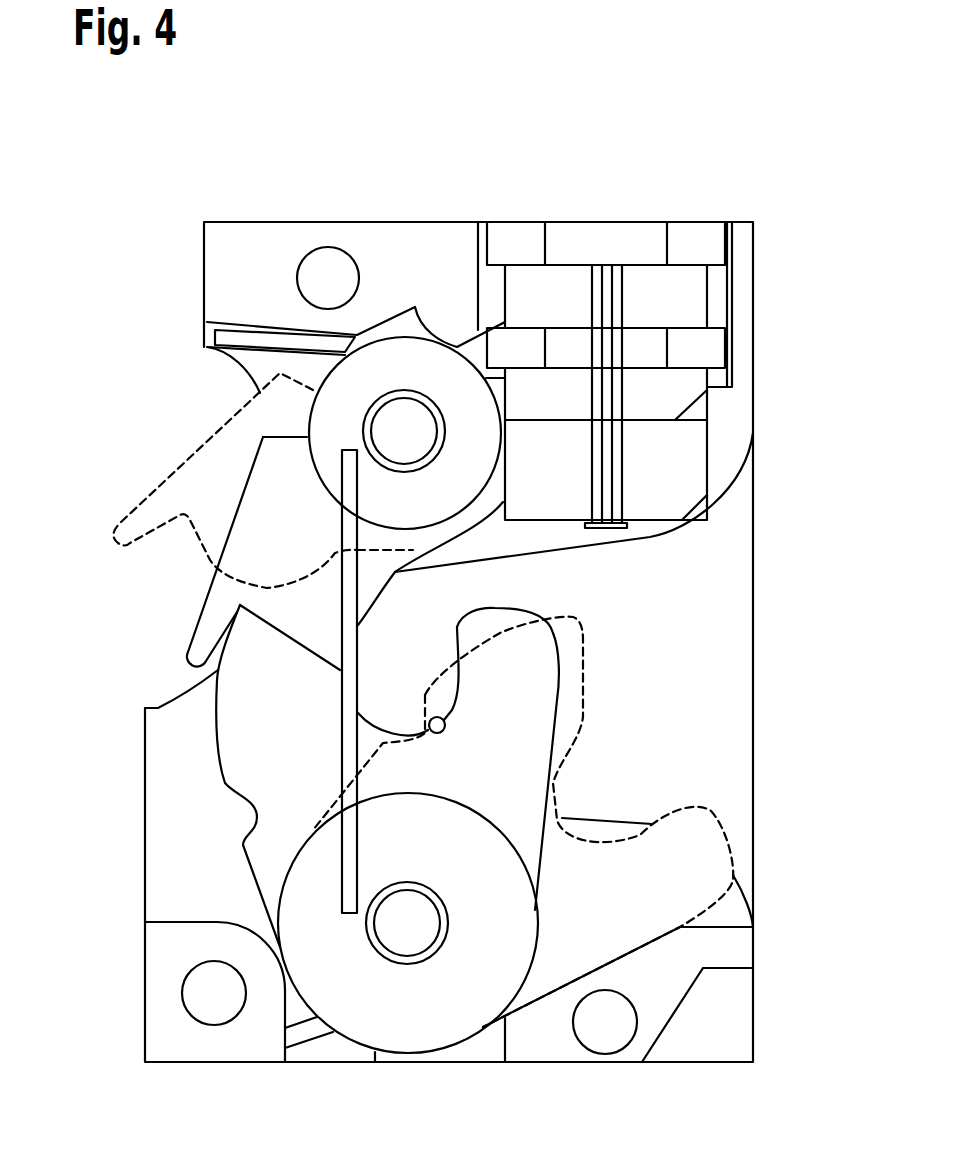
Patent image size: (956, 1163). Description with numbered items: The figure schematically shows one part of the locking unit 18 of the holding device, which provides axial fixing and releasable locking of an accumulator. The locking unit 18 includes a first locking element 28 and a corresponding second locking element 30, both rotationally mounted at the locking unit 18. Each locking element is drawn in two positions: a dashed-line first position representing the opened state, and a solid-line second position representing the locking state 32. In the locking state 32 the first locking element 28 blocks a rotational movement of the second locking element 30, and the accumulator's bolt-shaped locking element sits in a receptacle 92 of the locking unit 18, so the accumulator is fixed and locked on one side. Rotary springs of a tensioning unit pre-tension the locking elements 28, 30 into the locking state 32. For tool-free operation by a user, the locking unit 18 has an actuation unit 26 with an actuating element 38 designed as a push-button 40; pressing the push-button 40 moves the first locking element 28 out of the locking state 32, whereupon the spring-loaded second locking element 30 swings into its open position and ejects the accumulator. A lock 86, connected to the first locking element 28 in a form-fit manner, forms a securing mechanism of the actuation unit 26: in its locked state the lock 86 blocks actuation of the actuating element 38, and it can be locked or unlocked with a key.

The locking unit 18 is at (361, 176).
The actuation unit 26 is at (498, 203).
The actuating element 38 is at (623, 214).
The push-button 40 is at (606, 396).
The lock 86 is at (392, 428).
The first locking element 28 is at (215, 622).
The locking state 32 is at (152, 666).
The second locking element 30 is at (258, 692).
The receptacle 92 is at (405, 663).